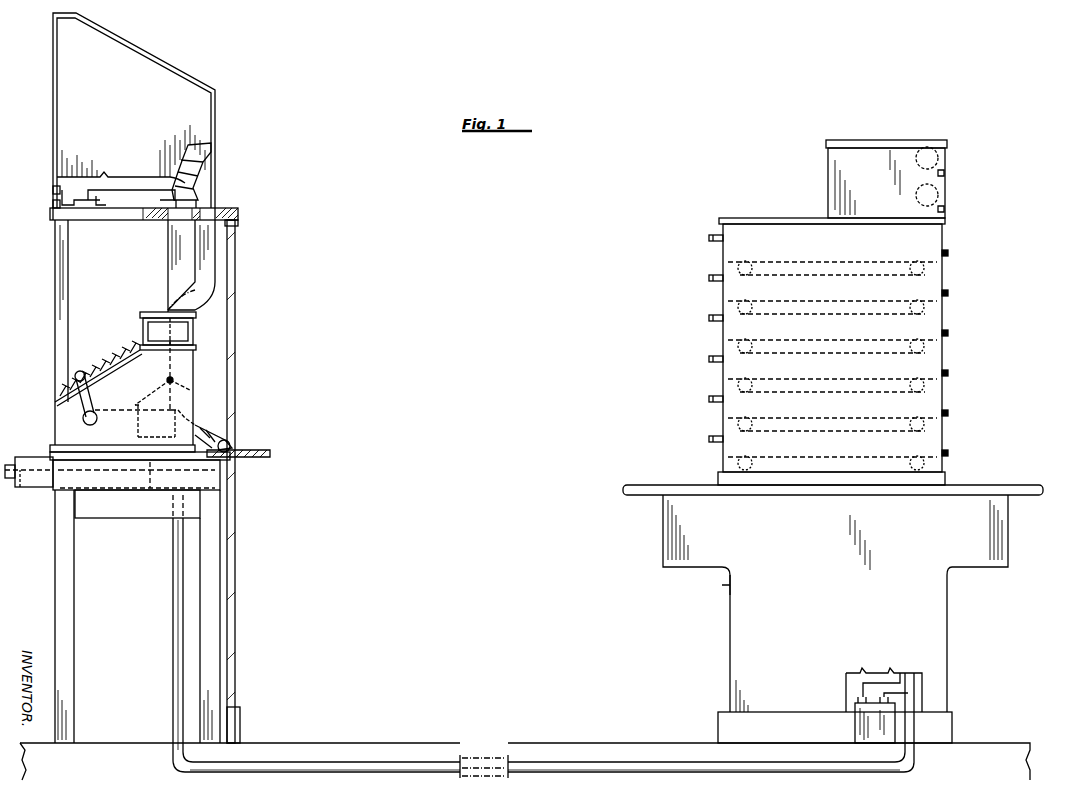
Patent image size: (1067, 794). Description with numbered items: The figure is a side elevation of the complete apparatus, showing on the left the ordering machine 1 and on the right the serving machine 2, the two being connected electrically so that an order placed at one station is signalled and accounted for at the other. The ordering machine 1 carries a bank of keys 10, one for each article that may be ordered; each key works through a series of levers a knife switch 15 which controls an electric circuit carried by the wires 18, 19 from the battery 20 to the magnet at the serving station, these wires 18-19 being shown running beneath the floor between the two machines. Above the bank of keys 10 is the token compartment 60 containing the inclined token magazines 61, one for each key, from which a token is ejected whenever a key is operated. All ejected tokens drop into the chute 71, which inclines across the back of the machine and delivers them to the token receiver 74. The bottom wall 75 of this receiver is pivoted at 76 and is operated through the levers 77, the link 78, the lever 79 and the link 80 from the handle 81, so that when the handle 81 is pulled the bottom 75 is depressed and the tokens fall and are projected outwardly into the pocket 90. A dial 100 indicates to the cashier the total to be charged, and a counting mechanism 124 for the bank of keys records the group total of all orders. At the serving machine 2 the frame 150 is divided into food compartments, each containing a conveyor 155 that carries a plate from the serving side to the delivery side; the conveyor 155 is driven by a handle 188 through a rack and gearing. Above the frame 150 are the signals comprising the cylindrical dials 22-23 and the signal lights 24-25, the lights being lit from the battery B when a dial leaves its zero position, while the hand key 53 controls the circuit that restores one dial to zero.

The ordering machine 1 is at (125, 265).
The serving machine 2 is at (732, 208).
The keys 10 is at (112, 360).
The knife switch 15 is at (92, 200).
The wire 18 is at (53, 190).
The wire 19 is at (53, 204).
The wires 18-19 is at (584, 763).
The battery 20 is at (855, 725).
The battery B is at (875, 723).
The dials 22-23 is at (948, 162).
The signal lights 24-25 is at (946, 174).
The key 53 is at (950, 293).
The token compartment 60 is at (138, 138).
The token magazines 61 is at (190, 182).
The chute 71 is at (212, 262).
The token receiver 74 is at (171, 372).
The bottom wall 75 is at (180, 388).
The pivot 76 is at (168, 380).
The levers 77 is at (138, 418).
The link 78 is at (160, 431).
The lever 79 is at (174, 422).
The link 80 is at (130, 408).
The handle 81 is at (92, 388).
The pocket 90 is at (232, 442).
The dial 100 is at (145, 330).
The counting mechanism 124 is at (55, 430).
The frame 150 is at (936, 241).
The conveyor 155 is at (820, 262).
The handle 188 is at (708, 319).